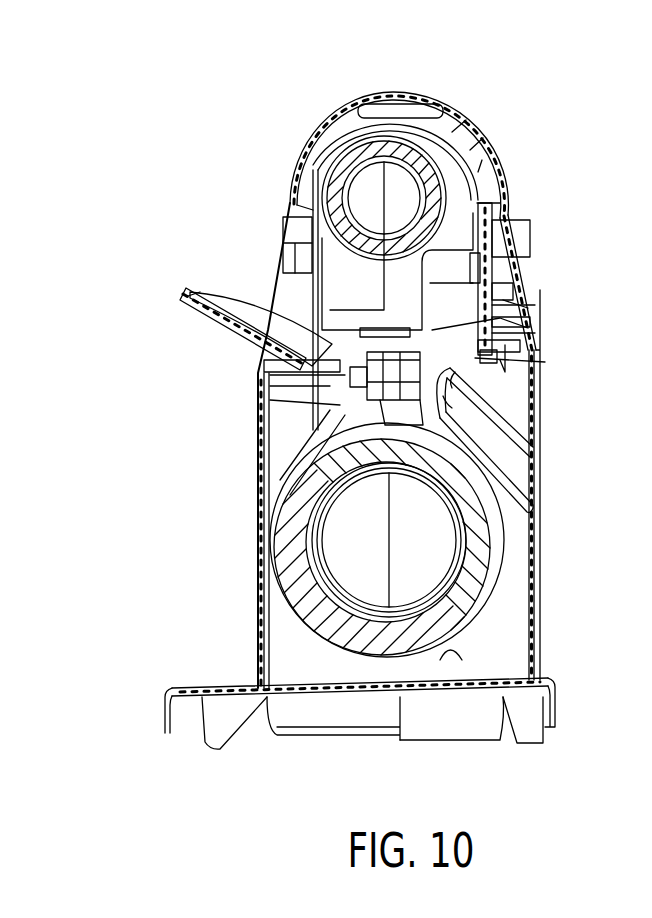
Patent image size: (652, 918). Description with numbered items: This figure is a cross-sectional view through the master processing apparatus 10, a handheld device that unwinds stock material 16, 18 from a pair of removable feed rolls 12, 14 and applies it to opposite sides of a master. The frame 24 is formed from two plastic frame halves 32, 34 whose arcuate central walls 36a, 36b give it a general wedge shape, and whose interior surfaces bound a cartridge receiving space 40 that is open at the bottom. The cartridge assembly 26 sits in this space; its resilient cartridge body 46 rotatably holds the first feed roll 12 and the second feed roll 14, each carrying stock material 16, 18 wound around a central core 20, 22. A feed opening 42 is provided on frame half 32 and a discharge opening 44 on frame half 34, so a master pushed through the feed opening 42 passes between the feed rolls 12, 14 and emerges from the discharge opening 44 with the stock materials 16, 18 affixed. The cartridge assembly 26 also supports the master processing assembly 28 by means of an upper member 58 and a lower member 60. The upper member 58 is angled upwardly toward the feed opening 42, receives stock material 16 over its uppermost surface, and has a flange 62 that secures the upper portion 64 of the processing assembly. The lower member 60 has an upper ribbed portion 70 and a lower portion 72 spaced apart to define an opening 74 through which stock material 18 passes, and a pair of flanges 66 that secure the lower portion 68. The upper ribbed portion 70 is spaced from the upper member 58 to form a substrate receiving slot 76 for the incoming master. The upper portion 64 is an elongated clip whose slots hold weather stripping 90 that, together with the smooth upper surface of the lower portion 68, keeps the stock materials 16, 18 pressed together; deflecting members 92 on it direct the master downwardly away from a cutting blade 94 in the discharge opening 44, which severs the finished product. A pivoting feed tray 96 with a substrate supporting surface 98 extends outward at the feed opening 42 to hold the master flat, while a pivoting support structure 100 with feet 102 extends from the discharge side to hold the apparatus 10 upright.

The master processing apparatus 10 is at (510, 105).
The first feed roll 12 is at (437, 187).
The second feed roll 14 is at (473, 553).
The stock material 16 is at (440, 197).
The stock material 18 is at (420, 610).
The central core 20 is at (515, 237).
The central core 22 is at (450, 602).
The frame 24 is at (383, 95).
The cartridge assembly 26 is at (460, 658).
The master processing assembly 28 is at (497, 330).
The frame half 32 is at (335, 127).
The frame half 34 is at (467, 127).
The arcuate central wall 36a is at (307, 163).
The arcuate central wall 36b is at (490, 145).
The cartridge receiving space 40 is at (307, 657).
The feed opening 42 is at (292, 290).
The discharge opening 44 is at (510, 382).
The cartridge body 46 is at (430, 663).
The upper member 58 is at (422, 345).
The lower member 60 is at (508, 430).
The flange 62 is at (500, 312).
The upper portion 64 is at (267, 368).
The flanges 66 is at (440, 402).
The lower portion 68 is at (418, 375).
The upper ribbed portion 70 is at (350, 381).
The lower portion 72 is at (322, 440).
The opening 74 is at (345, 408).
The substrate receiving slot 76 is at (335, 350).
The weather stripping 90 is at (517, 345).
The deflecting members 92 is at (445, 395).
The cutting blade 94 is at (543, 362).
The feed tray 96 is at (185, 322).
The substrate supporting surface 98 is at (230, 303).
The support structure 100 is at (215, 678).
The feet 102 is at (208, 727).